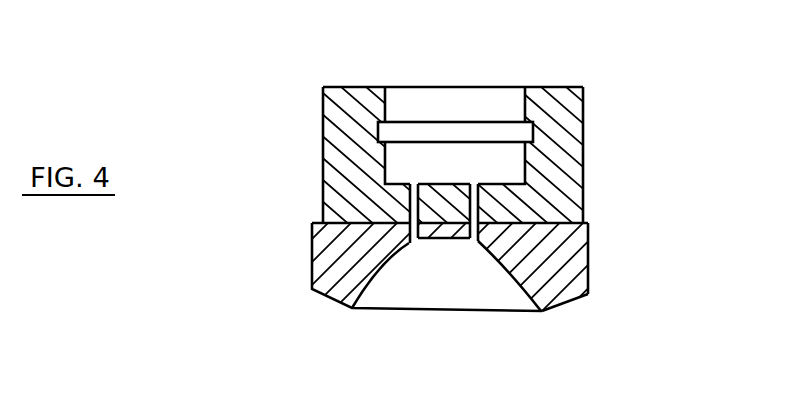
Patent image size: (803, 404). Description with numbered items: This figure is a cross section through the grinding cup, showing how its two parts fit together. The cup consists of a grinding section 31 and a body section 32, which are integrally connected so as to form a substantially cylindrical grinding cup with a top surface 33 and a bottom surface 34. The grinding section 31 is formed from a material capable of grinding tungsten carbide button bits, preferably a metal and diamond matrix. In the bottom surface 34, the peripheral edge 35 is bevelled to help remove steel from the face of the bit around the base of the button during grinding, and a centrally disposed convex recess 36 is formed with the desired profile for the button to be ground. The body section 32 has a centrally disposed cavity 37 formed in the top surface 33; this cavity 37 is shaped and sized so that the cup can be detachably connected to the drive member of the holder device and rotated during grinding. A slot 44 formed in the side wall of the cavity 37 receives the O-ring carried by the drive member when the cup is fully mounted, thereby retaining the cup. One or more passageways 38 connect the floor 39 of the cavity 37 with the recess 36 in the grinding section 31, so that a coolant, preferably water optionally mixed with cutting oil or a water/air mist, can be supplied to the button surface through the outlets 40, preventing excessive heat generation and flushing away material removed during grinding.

The grinding section 31 is at (588, 260).
The body section 32 is at (585, 120).
The top surface 33 is at (557, 88).
The bottom surface 34 is at (526, 291).
The peripheral edge 35 is at (575, 300).
The convex recess 36 is at (389, 246).
The cavity 37 is at (456, 100).
The passageways 38 is at (413, 206).
The floor 39 is at (433, 186).
The outlets 40 is at (413, 243).
The slot 44 is at (390, 133).